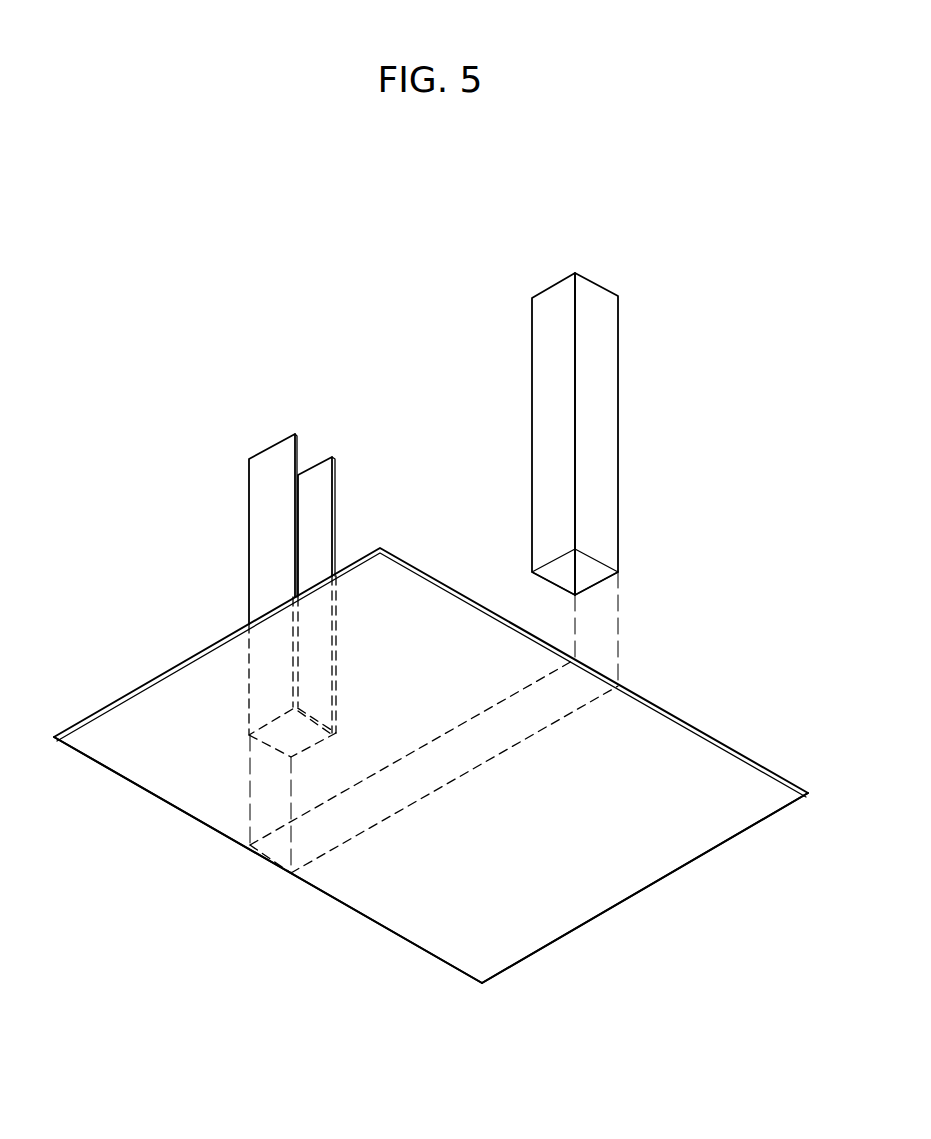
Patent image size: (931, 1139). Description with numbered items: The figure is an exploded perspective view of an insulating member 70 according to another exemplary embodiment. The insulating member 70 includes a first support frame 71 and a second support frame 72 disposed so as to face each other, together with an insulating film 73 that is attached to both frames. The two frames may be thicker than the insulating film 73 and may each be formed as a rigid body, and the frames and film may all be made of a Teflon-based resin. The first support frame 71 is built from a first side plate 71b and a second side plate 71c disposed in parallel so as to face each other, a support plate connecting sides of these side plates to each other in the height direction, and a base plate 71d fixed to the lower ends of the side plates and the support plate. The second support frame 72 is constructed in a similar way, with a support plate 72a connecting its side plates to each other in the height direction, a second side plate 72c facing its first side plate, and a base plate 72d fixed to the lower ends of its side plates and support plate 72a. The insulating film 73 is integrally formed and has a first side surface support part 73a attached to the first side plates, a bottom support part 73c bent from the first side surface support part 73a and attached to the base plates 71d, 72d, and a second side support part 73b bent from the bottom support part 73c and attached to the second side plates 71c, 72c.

The insulating member 70 is at (394, 264).
The first support frame 71 is at (260, 433).
The first side plate 71b is at (317, 475).
The second side plate 71c is at (263, 543).
The base plate 71d is at (278, 737).
The second support frame 72 is at (611, 270).
The support plate 72a is at (598, 450).
The second side plate 72c is at (548, 378).
The base plate 72d is at (593, 572).
The insulating film 73 is at (515, 979).
The first side surface support part 73a is at (408, 908).
The second side support part 73b is at (145, 753).
The bottom support part 73c is at (322, 837).